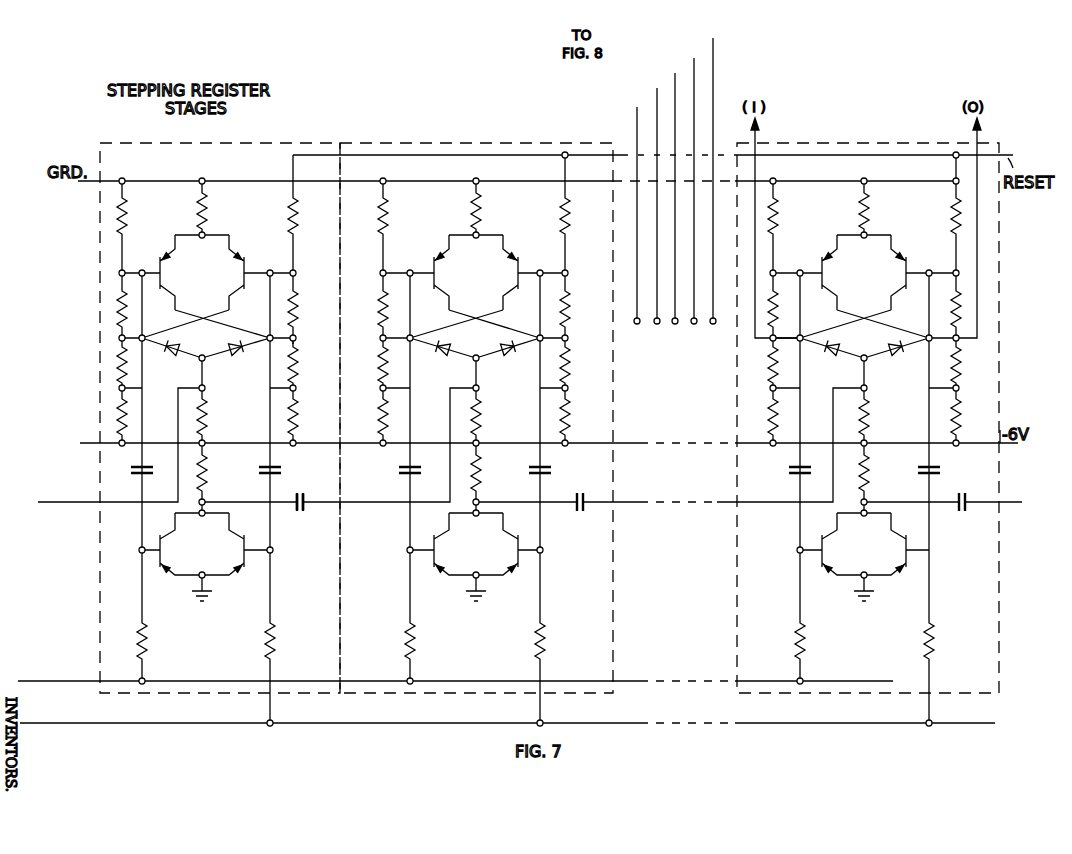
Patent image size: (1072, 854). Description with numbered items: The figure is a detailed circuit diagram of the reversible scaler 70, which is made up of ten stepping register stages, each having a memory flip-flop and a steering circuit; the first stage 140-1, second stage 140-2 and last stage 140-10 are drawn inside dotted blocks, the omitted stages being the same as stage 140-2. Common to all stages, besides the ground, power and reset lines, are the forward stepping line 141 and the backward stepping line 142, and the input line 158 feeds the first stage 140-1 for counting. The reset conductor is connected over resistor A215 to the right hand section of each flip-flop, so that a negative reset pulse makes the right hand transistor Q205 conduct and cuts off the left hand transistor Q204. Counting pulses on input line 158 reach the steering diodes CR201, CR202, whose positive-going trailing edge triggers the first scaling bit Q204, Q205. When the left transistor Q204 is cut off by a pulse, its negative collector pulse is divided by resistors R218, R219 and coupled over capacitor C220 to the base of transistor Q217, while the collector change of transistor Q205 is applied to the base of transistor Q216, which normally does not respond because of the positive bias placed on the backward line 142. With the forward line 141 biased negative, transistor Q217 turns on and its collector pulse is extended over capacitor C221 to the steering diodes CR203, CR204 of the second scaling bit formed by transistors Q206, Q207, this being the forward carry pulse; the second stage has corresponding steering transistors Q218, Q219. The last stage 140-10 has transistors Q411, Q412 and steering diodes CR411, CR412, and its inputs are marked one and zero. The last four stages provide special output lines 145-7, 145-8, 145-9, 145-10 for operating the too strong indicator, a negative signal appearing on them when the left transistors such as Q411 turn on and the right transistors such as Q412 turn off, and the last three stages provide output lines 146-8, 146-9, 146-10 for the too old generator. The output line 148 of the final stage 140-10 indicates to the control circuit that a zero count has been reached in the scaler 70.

The reversible scaler 70 is at (548, 475).
The first stepping register stage 140-1 is at (317, 140).
The second stepping register stage 140-2 is at (519, 140).
The tenth stepping register stage 140-10 is at (868, 408).
The forward stepping line 141 is at (69, 722).
The backward stepping line 142 is at (73, 680).
The input line 158 is at (66, 514).
The output line 148 is at (1005, 488).
The special output line 145-7 is at (637, 120).
The special output line 145-8 is at (657, 101).
The special output line 146-8 is at (675, 84).
The special output line 145-9 is at (694, 70).
The special output line 146-9 is at (713, 53).
The special output line 145-10 is at (758, 146).
The special output line 146-10 is at (980, 146).
The resistor A215 is at (296, 217).
The left hand transistor Q204 is at (172, 254).
The right hand transistor Q205 is at (279, 246).
The transistor Q206 is at (439, 254).
The transistor Q207 is at (551, 246).
The left hand transistor Q411 is at (830, 254).
The right hand transistor Q412 is at (946, 246).
The transistor Q216 is at (193, 601).
The transistor Q217 is at (264, 601).
The transistor Q218 is at (466, 601).
The transistor Q219 is at (524, 570).
The steering diode CR201 is at (176, 359).
The steering diode CR202 is at (226, 357).
The steering diode CR203 is at (446, 359).
The steering diode CR204 is at (502, 357).
The steering diode CR411 is at (816, 359).
The steering diode CR412 is at (894, 357).
The resistor R218 is at (298, 372).
The resistor R219 is at (298, 422).
The capacitor C220 is at (274, 478).
The capacitor C221 is at (304, 509).